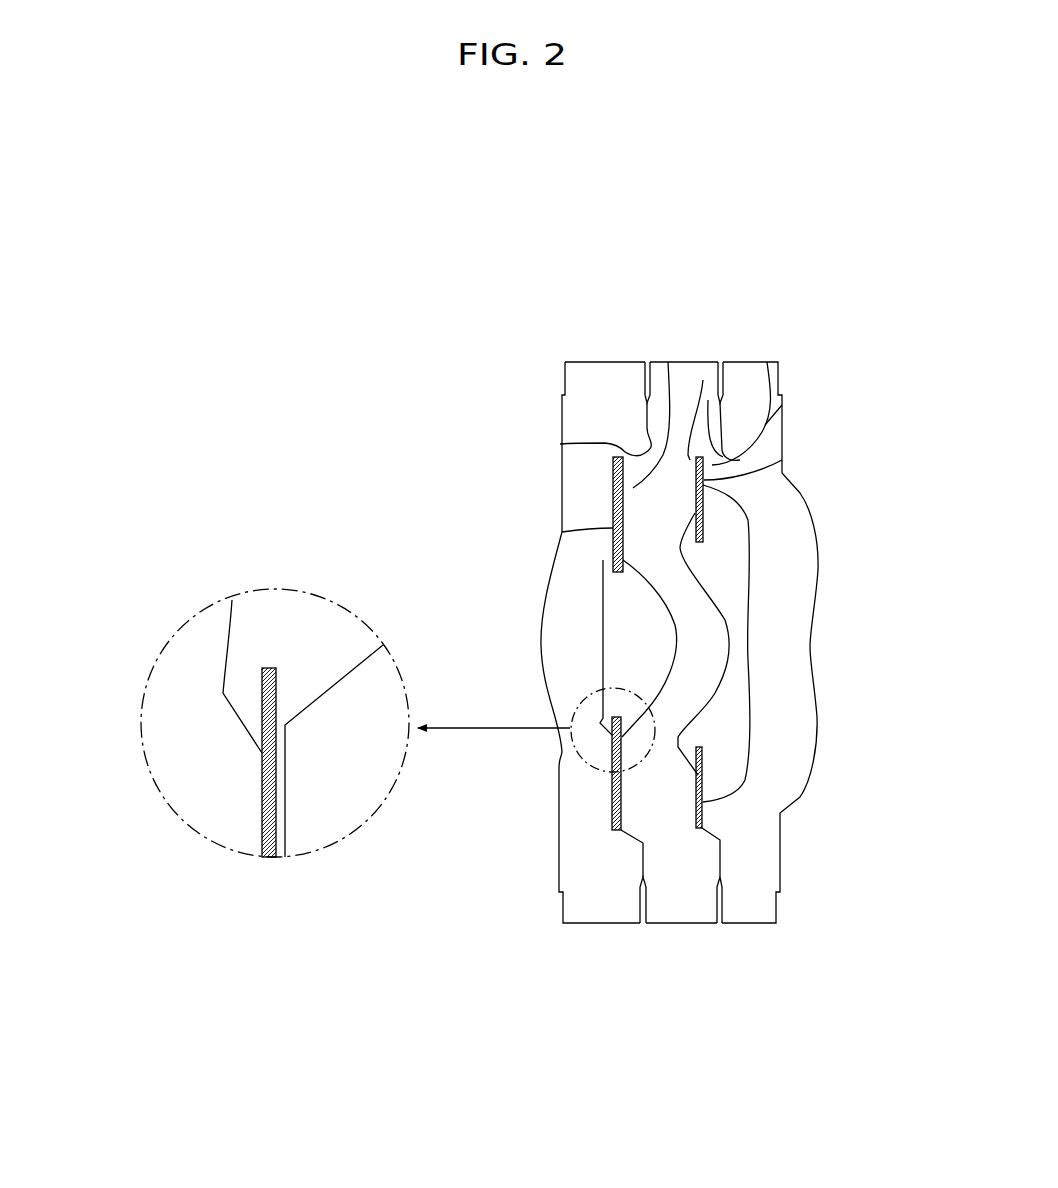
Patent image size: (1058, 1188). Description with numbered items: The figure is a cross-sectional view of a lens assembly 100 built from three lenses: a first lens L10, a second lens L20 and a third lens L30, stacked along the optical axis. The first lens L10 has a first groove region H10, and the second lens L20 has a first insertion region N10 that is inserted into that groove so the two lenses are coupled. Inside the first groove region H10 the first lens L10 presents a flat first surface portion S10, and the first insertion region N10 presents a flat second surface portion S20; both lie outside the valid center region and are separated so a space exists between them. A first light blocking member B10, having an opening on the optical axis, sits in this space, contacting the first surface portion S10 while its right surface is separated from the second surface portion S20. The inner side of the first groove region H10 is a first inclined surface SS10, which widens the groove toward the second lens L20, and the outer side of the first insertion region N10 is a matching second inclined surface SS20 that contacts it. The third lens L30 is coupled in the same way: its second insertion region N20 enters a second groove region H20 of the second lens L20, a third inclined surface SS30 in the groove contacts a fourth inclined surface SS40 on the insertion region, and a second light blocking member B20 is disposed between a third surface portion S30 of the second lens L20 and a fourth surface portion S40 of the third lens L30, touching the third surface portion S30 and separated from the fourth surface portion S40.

The lens assembly 100 is at (850, 284).
The first lens L10 is at (600, 925).
The second lens L20 is at (678, 925).
The third lens L30 is at (743, 925).
The first surface portion S10 is at (562, 532).
The second surface portion S20 is at (624, 540).
The third surface portion S30 is at (695, 493).
The fourth surface portion S40 is at (782, 460).
The first inclined surface SS10 is at (560, 444).
The second inclined surface SS20 is at (634, 426).
The third inclined surface SS30 is at (708, 400).
The fourth inclined surface SS40 is at (767, 362).
The first groove region H10 is at (606, 500).
The second groove region H20 is at (693, 465).
The first insertion region N10 is at (668, 362).
The second insertion region N20 is at (782, 405).
The first light blocking member B10 is at (612, 553).
The second light blocking member B20 is at (704, 527).